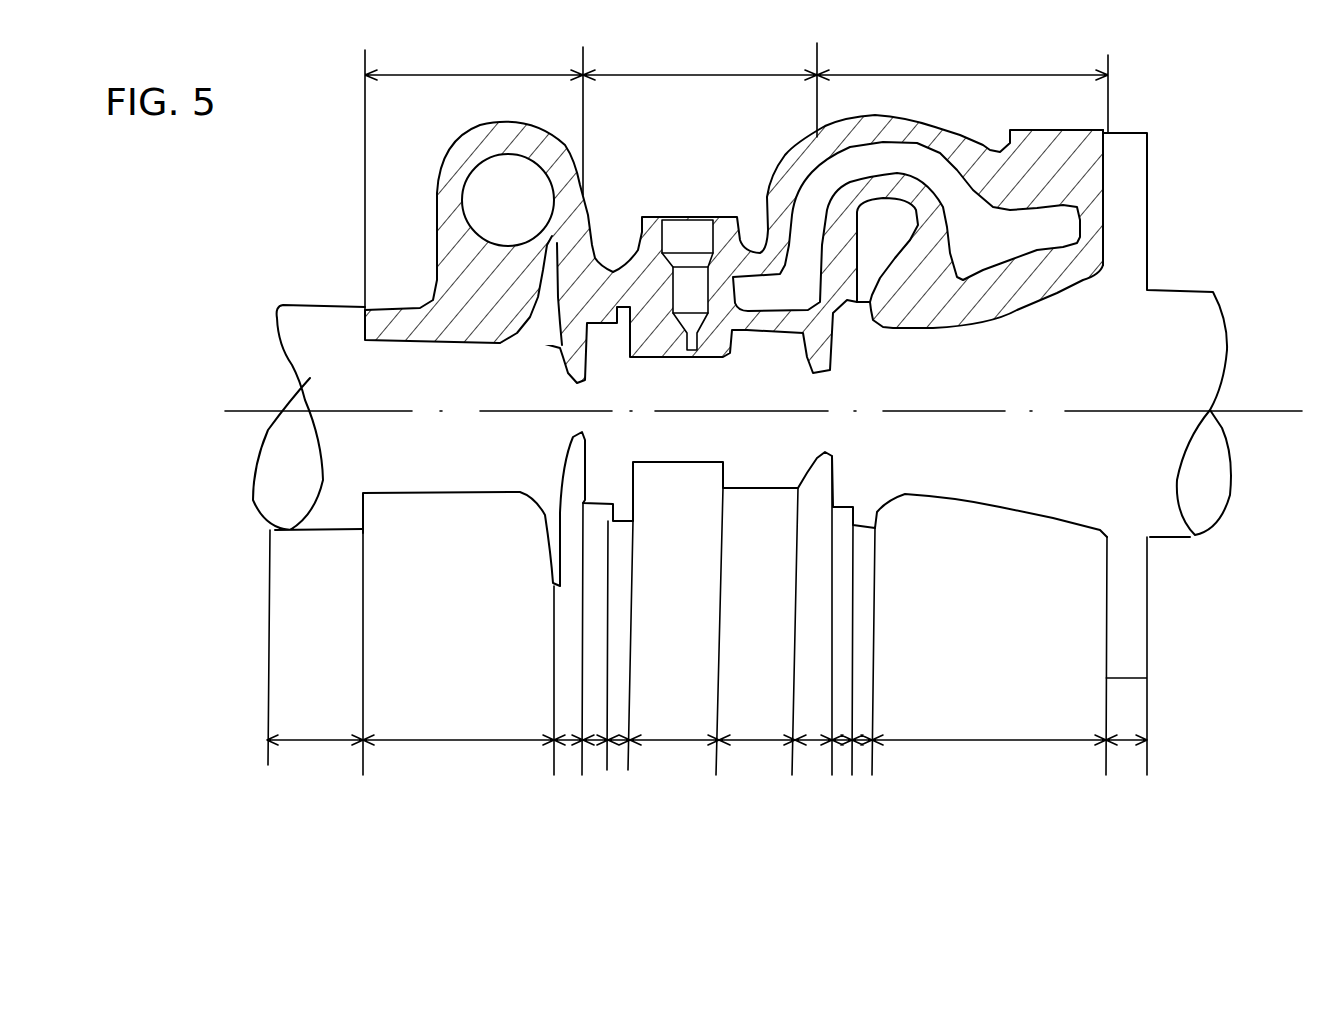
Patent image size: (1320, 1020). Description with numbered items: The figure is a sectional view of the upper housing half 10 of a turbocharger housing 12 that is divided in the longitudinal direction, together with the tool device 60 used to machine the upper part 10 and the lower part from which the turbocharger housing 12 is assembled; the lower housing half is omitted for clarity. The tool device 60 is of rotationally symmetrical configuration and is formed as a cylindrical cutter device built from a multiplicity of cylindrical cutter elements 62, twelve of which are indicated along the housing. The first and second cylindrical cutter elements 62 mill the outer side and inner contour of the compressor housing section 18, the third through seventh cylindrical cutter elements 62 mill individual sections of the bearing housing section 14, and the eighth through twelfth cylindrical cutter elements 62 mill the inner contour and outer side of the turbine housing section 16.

The upper housing half 10 is at (1100, 212).
The turbocharger housing 12 is at (1098, 180).
The bearing housing section 14 is at (708, 73).
The turbine housing section 16 is at (907, 73).
The compressor housing section 18 is at (465, 73).
The tool device 60 is at (1134, 330).
The cylindrical cutter element 62 is at (707, 664).